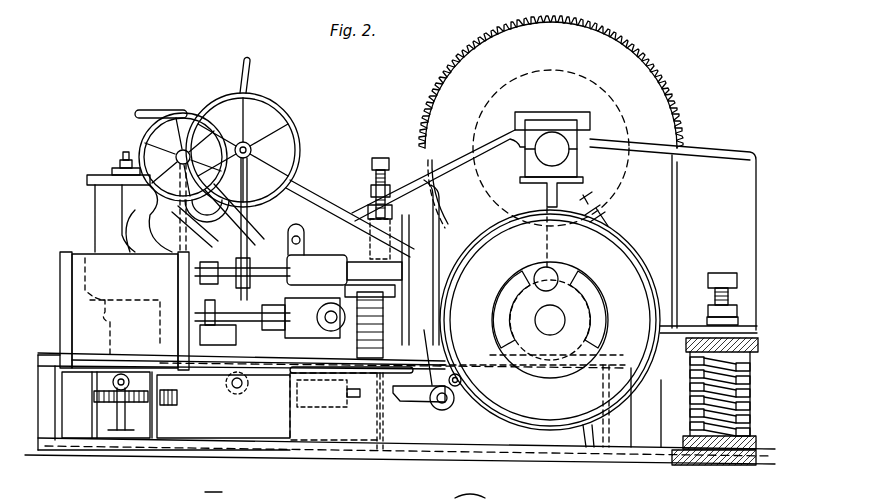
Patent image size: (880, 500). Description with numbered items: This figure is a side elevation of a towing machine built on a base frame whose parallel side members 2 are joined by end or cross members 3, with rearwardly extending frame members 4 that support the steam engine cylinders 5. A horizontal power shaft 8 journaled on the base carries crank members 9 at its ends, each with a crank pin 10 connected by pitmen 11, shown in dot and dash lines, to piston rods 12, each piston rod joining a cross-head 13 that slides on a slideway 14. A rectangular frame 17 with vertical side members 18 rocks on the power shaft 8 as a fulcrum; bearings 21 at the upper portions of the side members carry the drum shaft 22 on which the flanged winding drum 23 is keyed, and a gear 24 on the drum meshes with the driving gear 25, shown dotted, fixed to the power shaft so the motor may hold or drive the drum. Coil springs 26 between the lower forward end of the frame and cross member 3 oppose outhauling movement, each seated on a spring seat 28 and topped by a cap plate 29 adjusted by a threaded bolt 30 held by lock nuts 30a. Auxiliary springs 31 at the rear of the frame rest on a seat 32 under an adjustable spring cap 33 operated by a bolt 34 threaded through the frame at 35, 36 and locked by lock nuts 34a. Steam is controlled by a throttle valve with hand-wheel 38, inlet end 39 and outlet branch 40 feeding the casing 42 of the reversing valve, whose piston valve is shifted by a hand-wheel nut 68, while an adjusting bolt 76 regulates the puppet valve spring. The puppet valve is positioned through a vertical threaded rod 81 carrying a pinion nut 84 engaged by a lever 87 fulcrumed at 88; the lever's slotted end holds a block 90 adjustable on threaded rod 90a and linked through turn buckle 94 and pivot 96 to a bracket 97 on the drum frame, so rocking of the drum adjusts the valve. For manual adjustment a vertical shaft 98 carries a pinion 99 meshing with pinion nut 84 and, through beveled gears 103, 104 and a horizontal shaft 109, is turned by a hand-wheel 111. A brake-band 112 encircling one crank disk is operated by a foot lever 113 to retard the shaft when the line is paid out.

The side members 2 is at (545, 446).
The end or cross members 3 is at (726, 466).
The rearwardly extending frame members 4 is at (72, 385).
The cylinders 5 is at (72, 272).
The power shaft 8 is at (550, 334).
The crank members 9 is at (638, 350).
The crank pin 10 is at (553, 269).
The pitmen 11 is at (540, 280).
The piston rods 12 is at (276, 323).
The cross-head 13 is at (317, 260).
The slideway 14 is at (280, 278).
The rectangular frame 17 is at (462, 166).
The side members 18 is at (706, 152).
The bearings 21 is at (560, 122).
The drum shaft 22 is at (572, 154).
The flanged winding drum 23 is at (633, 74).
The gear 24 is at (626, 38).
The driving gear 25 is at (600, 298).
The coil springs 26 is at (752, 396).
The spring seat 28 is at (752, 444).
The compression or cap plate 29 is at (760, 347).
The threaded bolt 30 is at (733, 267).
The lock nuts 30a is at (740, 316).
The springs 31 is at (356, 344).
The seat 32 is at (370, 389).
The adjustable spring cap 33 is at (352, 279).
The bolt 34 is at (384, 158).
The lock nuts 34a is at (375, 185).
The threaded portion of frame 35 is at (372, 206).
The threaded portion of frame 36 is at (432, 252).
The hand-wheel 38 is at (142, 133).
The inlet end 39 is at (275, 222).
The outlet branch 40 is at (176, 260).
The casing 42 is at (100, 214).
The hand-wheel nut 68 is at (160, 110).
The adjusting bolt 76 is at (209, 496).
The vertical threaded rod 81 is at (117, 426).
The pinion nut 84 is at (112, 406).
The lever 87 is at (212, 398).
The fulcrum 88 is at (240, 400).
The block 90 is at (341, 426).
The threaded rod 90a is at (351, 403).
The turn buckle or sleeve 94 is at (322, 317).
The pivot 96 is at (290, 246).
The bracket or extension 97 is at (337, 206).
The vertical shaft 98 is at (146, 438).
The pinion 99 is at (176, 410).
The beveled gear 103 is at (230, 342).
The beveled gear 104 is at (166, 314).
The horizontally disposed shaft 109 is at (470, 485).
The hand-wheel 111 is at (230, 93).
The brake-band 112 is at (588, 426).
The foot lever 113 is at (397, 402).